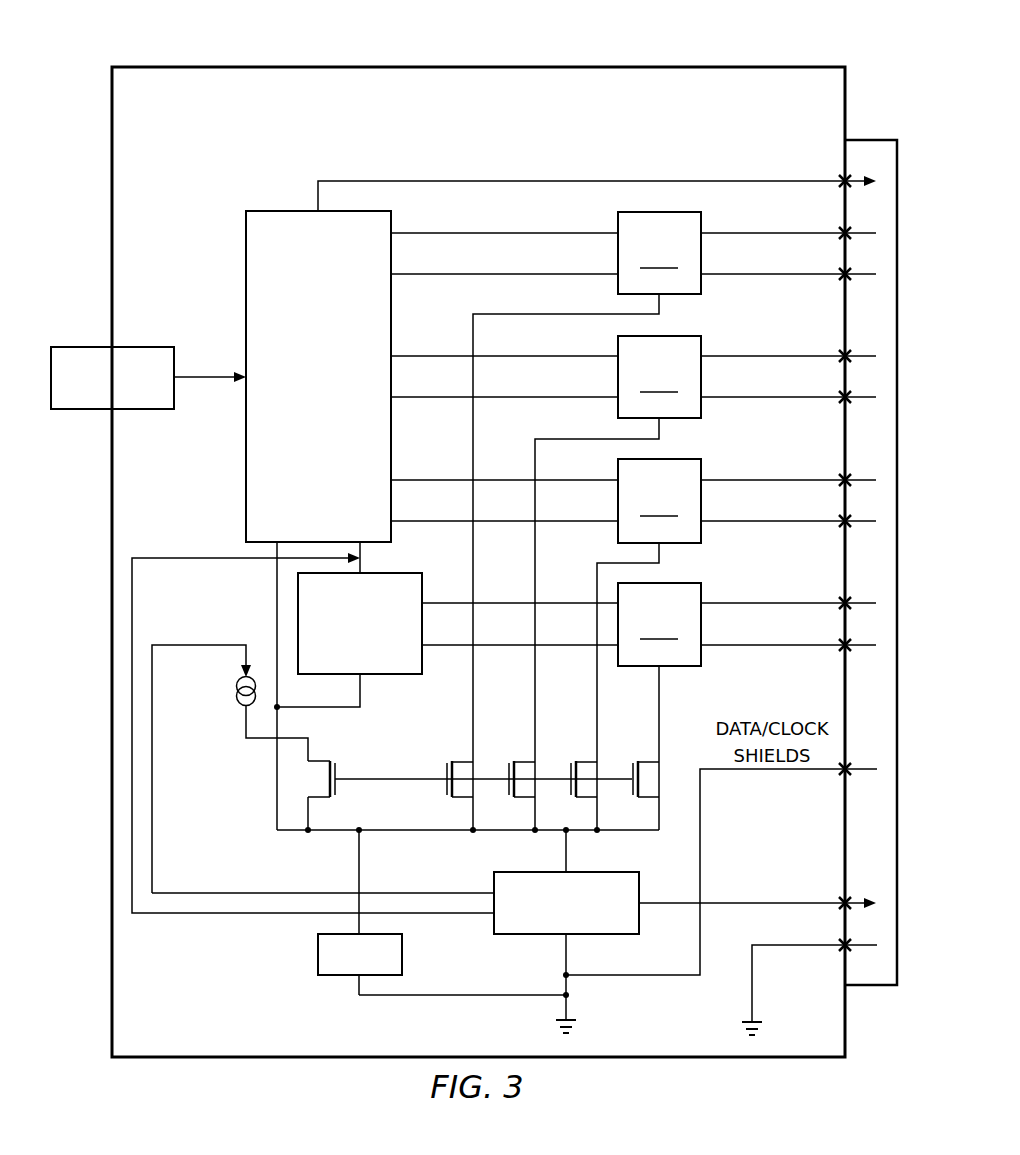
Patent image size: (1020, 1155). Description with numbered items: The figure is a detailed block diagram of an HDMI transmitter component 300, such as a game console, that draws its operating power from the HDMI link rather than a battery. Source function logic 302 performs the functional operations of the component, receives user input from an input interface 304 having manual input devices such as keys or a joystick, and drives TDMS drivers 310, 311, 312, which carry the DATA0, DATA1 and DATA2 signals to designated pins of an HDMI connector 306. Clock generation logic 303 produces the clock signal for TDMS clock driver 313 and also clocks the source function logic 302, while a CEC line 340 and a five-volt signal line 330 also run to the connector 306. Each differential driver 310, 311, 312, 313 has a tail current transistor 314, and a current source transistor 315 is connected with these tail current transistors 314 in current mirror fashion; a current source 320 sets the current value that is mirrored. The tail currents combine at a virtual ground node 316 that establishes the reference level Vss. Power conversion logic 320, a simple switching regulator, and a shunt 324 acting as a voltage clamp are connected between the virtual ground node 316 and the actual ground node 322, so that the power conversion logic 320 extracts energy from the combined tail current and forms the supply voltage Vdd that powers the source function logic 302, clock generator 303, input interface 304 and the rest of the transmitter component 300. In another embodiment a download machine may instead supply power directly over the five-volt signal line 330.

The HDMI transmitter component 300 is at (416, 60).
The source function logic 302 is at (246, 306).
The clock generation logic 303 is at (386, 676).
The input interface 304 is at (93, 347).
The HDMI connector 306 is at (870, 140).
The TDMS driver 310 is at (674, 521).
The TDMS driver 311 is at (705, 583).
The TDMS driver 312 is at (736, 644).
The TDMS clock driver 313 is at (747, 706).
The tail current transistors 314 is at (440, 775).
The current source transistor 315 is at (340, 785).
The virtual ground node 316 is at (340, 835).
The current source / power conversion logic 320 is at (235, 702).
The ground node 322 is at (462, 997).
The shunt 324 is at (318, 955).
The 5V signal line 330 is at (800, 902).
The CEC line 340 is at (522, 181).